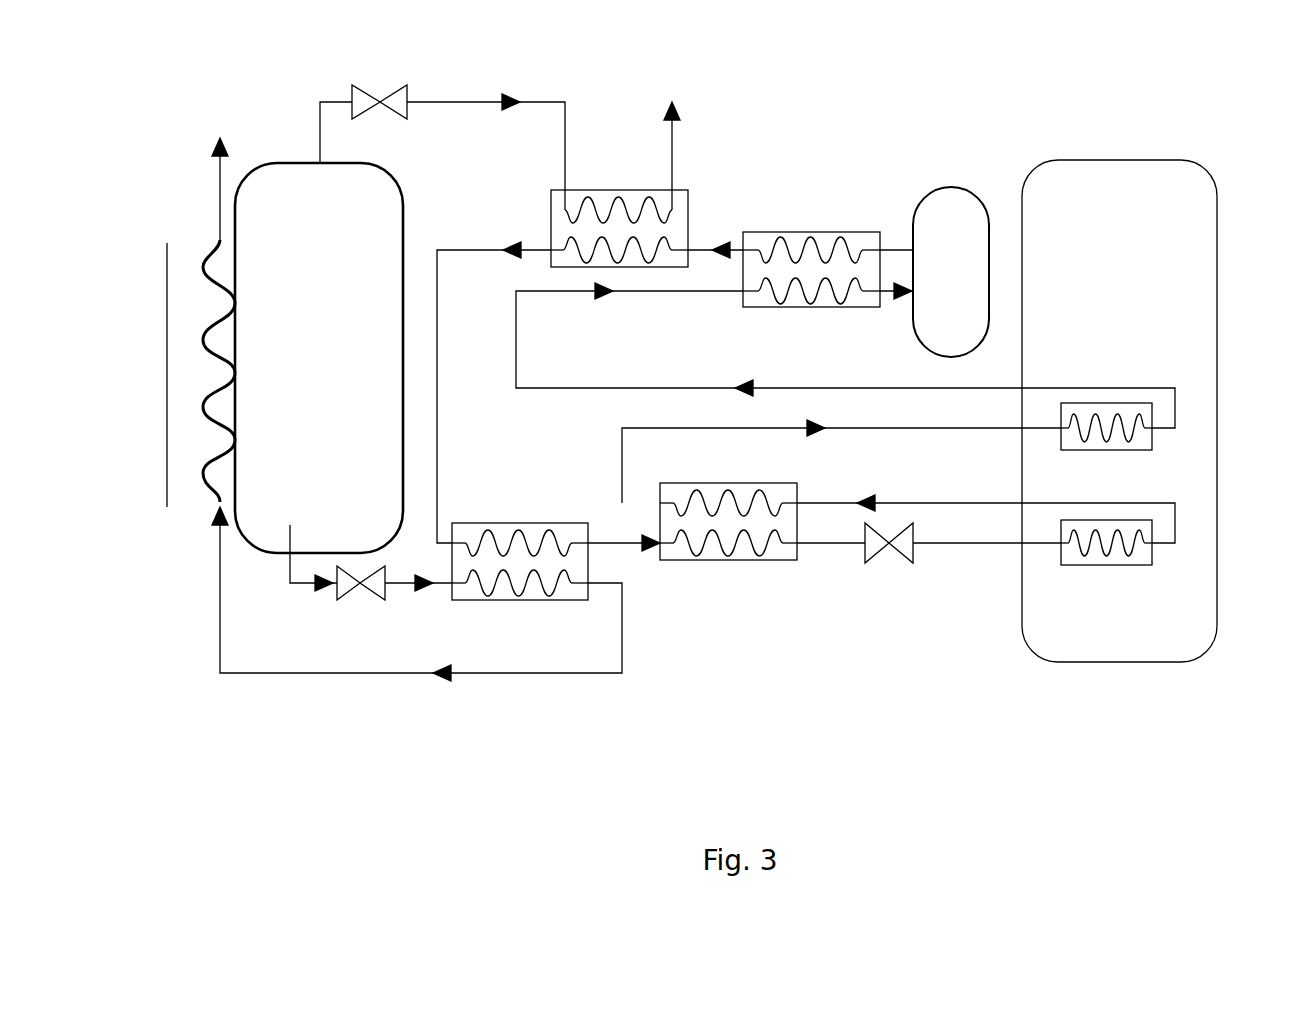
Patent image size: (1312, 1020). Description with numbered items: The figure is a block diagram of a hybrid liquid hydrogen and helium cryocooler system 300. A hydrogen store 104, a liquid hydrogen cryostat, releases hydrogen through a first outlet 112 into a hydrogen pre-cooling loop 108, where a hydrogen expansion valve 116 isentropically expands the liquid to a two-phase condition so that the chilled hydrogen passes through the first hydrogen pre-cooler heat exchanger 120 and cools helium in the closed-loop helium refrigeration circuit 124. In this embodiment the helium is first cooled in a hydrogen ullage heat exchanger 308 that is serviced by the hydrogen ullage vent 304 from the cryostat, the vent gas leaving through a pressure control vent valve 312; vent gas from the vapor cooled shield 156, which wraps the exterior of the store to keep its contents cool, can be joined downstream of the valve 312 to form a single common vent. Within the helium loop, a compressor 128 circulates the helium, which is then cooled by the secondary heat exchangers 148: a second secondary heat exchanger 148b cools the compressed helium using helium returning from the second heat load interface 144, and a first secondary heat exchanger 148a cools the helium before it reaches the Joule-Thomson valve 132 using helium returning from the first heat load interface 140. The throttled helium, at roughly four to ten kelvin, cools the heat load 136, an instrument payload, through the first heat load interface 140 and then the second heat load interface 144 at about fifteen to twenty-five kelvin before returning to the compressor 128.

The hydrogen store 104 is at (405, 182).
The hydrogen pre-cooling loop 108 is at (380, 709).
The first outlet 112 is at (308, 587).
The hydrogen expansion valve 116 is at (380, 602).
The first hydrogen pre-cooler heat exchanger 120 is at (506, 522).
The closed-loop helium refrigeration circuit 124 is at (744, 700).
The compressor 128 is at (950, 187).
The Joule-Thomson valve 132 is at (887, 547).
The heat load 136 is at (1133, 160).
The first heat load interface 140 is at (1152, 562).
The second heat load interface 144 is at (1152, 440).
The secondary heat exchangers 148 is at (770, 419).
The first secondary heat exchanger 148a is at (750, 561).
The second secondary heat exchanger 148b is at (802, 232).
The vapor cooled shield 156 is at (167, 343).
The hybrid liquid hydrogen and helium cryocooler system 300 is at (841, 87).
The hydrogen ullage vent 304 is at (318, 102).
The hydrogen ullage heat exchanger 308 is at (595, 188).
The pressure control vent valve 312 is at (378, 100).